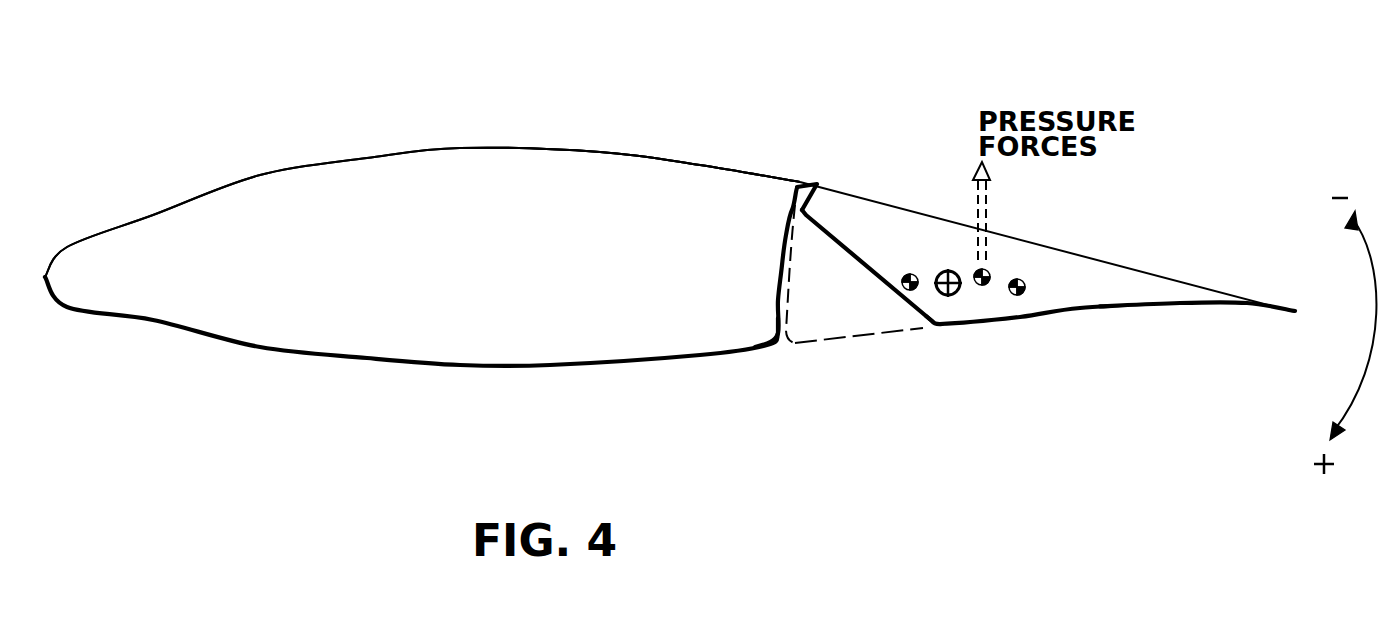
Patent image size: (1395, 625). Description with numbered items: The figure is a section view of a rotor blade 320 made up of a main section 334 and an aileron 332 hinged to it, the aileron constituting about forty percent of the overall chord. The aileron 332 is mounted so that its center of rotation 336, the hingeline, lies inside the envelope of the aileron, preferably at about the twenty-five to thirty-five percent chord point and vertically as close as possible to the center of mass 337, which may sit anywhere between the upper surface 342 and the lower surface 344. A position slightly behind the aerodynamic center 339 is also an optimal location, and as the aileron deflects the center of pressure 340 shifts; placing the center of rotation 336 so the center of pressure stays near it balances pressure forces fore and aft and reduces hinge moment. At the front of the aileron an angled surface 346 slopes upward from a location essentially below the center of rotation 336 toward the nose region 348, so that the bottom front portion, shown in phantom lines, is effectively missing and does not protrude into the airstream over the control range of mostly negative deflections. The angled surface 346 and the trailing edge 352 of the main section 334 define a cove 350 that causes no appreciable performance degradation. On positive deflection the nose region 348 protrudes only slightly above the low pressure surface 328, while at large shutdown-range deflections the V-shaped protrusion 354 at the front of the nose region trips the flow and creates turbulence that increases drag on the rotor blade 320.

The rotor blade 320 is at (627, 88).
The low pressure surface 328 is at (743, 168).
The aileron 332 is at (1193, 192).
The main section 334 is at (485, 261).
The center of rotation 336 is at (943, 268).
The center of mass 337 is at (1023, 280).
The aerodynamic center 339 is at (917, 289).
The center of pressure 340 is at (986, 285).
The upper surface 342 is at (1120, 260).
The lower surface 344 is at (1095, 310).
The angled surface 346 is at (882, 300).
The nose region 348 is at (838, 200).
The cove 350 is at (822, 312).
The trailing edge 352 is at (783, 312).
The V-shaped protrusion 354 is at (797, 183).